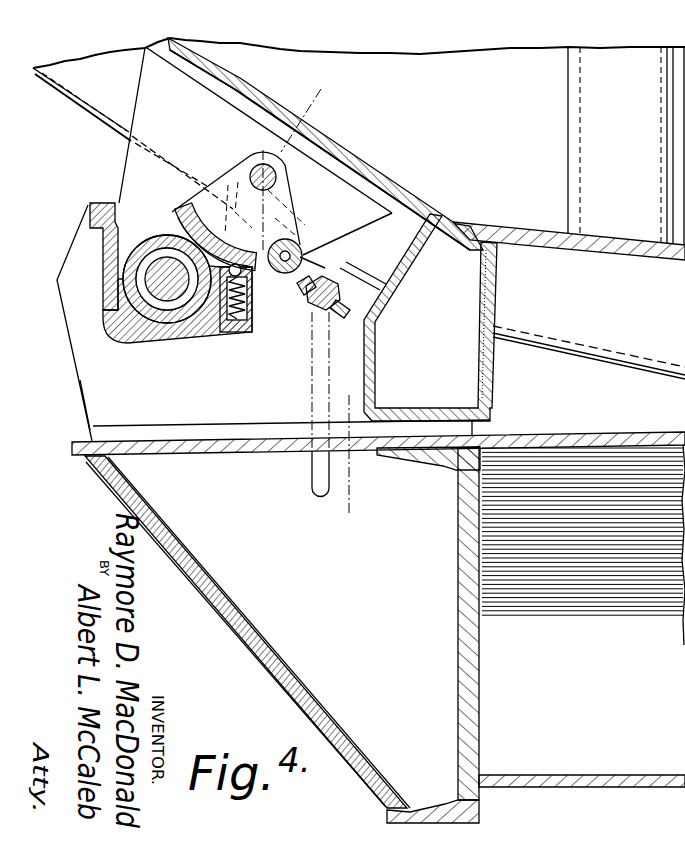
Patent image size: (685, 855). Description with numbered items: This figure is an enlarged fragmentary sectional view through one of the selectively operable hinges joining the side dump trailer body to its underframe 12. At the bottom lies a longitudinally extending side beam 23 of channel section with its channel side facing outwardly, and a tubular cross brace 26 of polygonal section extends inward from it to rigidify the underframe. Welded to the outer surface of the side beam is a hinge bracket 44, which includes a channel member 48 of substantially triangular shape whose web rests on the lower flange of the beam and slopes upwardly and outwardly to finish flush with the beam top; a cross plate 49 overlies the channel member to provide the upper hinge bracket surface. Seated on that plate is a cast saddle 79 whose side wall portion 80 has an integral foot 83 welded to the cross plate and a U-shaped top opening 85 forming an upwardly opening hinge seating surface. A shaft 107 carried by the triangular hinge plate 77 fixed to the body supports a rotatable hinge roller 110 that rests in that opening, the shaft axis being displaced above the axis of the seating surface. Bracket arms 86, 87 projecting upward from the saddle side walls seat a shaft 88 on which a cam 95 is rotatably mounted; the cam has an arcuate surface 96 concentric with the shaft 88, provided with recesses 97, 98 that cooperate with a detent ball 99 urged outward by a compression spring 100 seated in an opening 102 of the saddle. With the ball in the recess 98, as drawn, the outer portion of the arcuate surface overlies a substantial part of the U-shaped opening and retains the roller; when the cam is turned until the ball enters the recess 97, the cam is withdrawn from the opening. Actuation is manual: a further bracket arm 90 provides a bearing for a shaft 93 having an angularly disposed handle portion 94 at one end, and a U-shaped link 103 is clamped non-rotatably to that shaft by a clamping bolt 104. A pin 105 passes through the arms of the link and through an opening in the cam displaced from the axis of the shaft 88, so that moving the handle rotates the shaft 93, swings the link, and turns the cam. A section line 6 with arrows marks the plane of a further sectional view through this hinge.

The section line 6- 6 is at (326, 102).
The underframe 12 is at (460, 609).
The side beam 23 is at (472, 664).
The cross brace 26 is at (583, 780).
The hinge bracket 44 is at (255, 647).
The channel member 48 is at (113, 478).
The cross plate 49 is at (259, 453).
The hinge plate 77 is at (132, 162).
The saddle 79 is at (82, 398).
The side wall portion 80 is at (84, 366).
The foot 83 is at (182, 431).
The U-shaped top opening 85 is at (152, 334).
The bracket arm 86 is at (276, 214).
The bracket arm 87 is at (283, 189).
The shaft 88 is at (272, 166).
The bracket arm 90 is at (328, 258).
The shaft 93 is at (306, 300).
The handle portion 94 is at (306, 406).
The cam 95 is at (208, 197).
The arcuate surface 96 is at (177, 226).
The recess 97 is at (183, 230).
The recess 98 is at (236, 264).
The ball 99 is at (257, 284).
The compression spring 100 is at (223, 327).
The opening 102 is at (253, 340).
The U-shaped link 103 is at (343, 316).
The clamping bolt 104 is at (352, 276).
The pin 105 is at (304, 255).
The shaft 107 is at (150, 262).
The hinge roller 110 is at (105, 258).